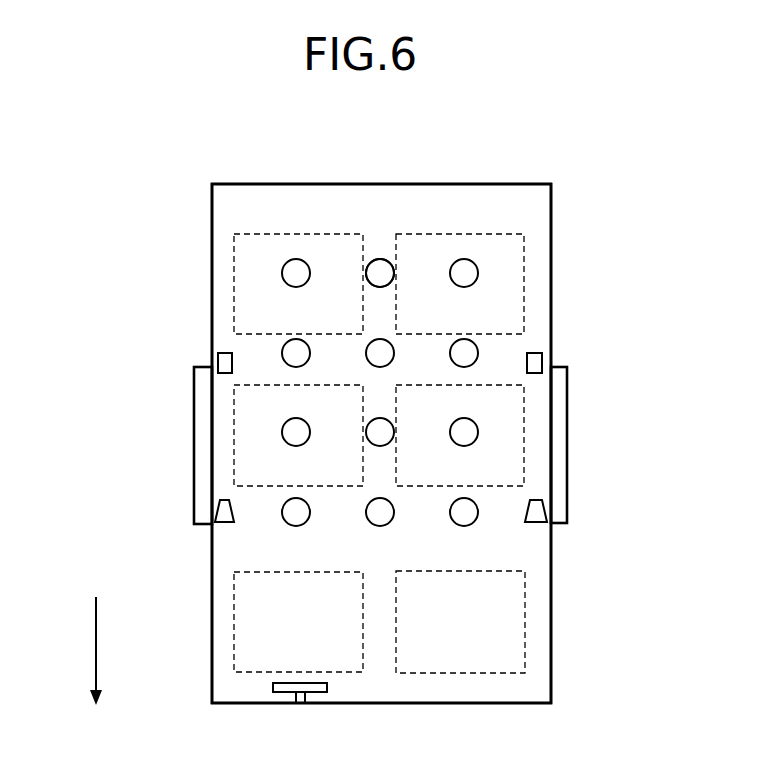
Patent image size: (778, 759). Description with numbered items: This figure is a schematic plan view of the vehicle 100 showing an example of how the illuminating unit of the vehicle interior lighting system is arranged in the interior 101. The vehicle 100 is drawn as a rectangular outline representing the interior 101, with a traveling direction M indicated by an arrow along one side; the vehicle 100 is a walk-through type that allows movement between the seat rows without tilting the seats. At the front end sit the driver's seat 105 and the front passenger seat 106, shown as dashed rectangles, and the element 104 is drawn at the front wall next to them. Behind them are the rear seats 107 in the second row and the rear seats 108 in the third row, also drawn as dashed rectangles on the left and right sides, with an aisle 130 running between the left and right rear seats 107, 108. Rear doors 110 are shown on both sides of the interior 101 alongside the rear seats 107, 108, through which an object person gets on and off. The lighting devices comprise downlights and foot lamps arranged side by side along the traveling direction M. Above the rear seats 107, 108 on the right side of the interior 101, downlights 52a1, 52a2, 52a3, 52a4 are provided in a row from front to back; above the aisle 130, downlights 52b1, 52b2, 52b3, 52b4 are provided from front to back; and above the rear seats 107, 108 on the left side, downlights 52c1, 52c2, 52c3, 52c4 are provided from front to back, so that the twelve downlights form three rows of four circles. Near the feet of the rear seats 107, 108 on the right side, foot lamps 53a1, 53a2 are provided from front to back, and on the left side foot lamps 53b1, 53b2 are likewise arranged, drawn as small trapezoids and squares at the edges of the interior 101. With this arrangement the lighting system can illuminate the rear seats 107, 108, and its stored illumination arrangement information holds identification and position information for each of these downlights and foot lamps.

The vehicle 100 is at (330, 150).
The interior 101 is at (446, 212).
The supply port / terminal 104 is at (250, 697).
The driver's seat 105 is at (235, 630).
The front passenger seat 106 is at (525, 630).
The rear seats in a second row 107 is at (234, 427).
The rear seats in a third row 108 is at (234, 289).
The rear door 110 is at (205, 449).
The aisle 130 is at (380, 245).
The downlight 52a1 is at (293, 515).
The downlight 52a2 is at (293, 440).
The downlight 52a3 is at (293, 355).
The downlight 52a4 is at (292, 266).
The downlight 52b1 is at (370, 520).
The downlight 52b2 is at (386, 433).
The downlight 52b3 is at (386, 352).
The downlight 52b4 is at (386, 274).
The downlight 52c1 is at (470, 518).
The downlight 52c2 is at (470, 438).
The downlight 52c3 is at (470, 355).
The downlight 52c4 is at (470, 275).
The foot lamp 53a1 is at (223, 512).
The foot lamp 53a2 is at (224, 360).
The foot lamp 53b1 is at (537, 512).
The foot lamp 53b2 is at (536, 360).
The traveling direction M is at (92, 645).